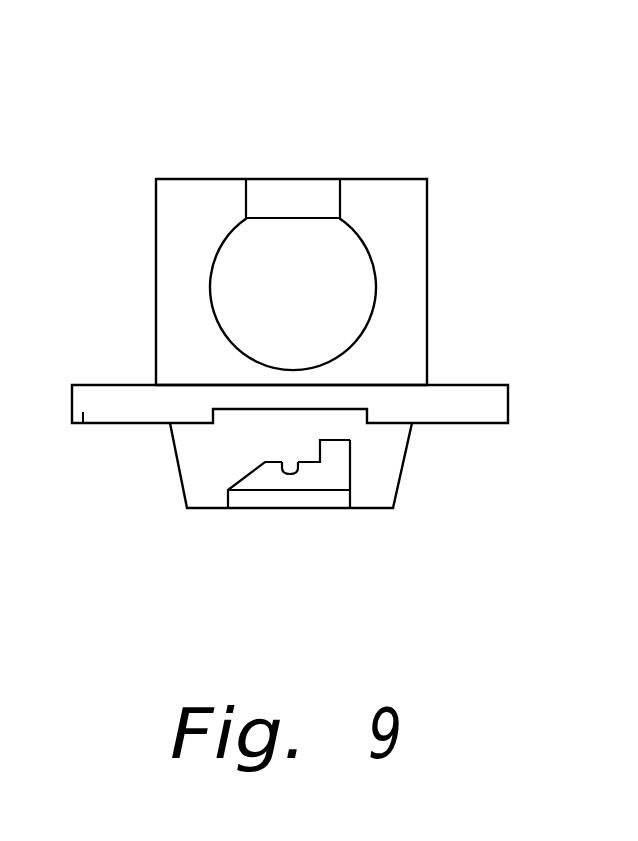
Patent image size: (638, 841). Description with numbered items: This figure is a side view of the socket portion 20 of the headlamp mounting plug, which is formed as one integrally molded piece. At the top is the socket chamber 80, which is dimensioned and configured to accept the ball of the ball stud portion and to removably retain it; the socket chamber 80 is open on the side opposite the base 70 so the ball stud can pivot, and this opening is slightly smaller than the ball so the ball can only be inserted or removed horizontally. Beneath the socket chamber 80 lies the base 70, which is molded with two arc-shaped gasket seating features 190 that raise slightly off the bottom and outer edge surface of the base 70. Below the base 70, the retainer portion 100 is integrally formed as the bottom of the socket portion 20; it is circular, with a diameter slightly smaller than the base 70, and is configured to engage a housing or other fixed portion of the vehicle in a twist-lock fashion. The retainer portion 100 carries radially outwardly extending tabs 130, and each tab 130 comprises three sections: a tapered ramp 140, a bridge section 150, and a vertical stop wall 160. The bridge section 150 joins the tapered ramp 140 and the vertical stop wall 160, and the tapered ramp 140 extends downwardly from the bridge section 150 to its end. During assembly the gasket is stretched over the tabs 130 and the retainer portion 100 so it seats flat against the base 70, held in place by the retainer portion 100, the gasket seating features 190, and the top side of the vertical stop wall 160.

The socket portion 20 is at (176, 135).
The socket chamber 80 is at (352, 278).
The base 70 is at (508, 405).
The gasket seating features 190 is at (80, 424).
The retainer portion 100 is at (181, 483).
The tab 130 is at (322, 500).
The tapered ramp 140 is at (265, 475).
The bridge section 150 is at (289, 472).
The vertical stop wall 160 is at (353, 450).